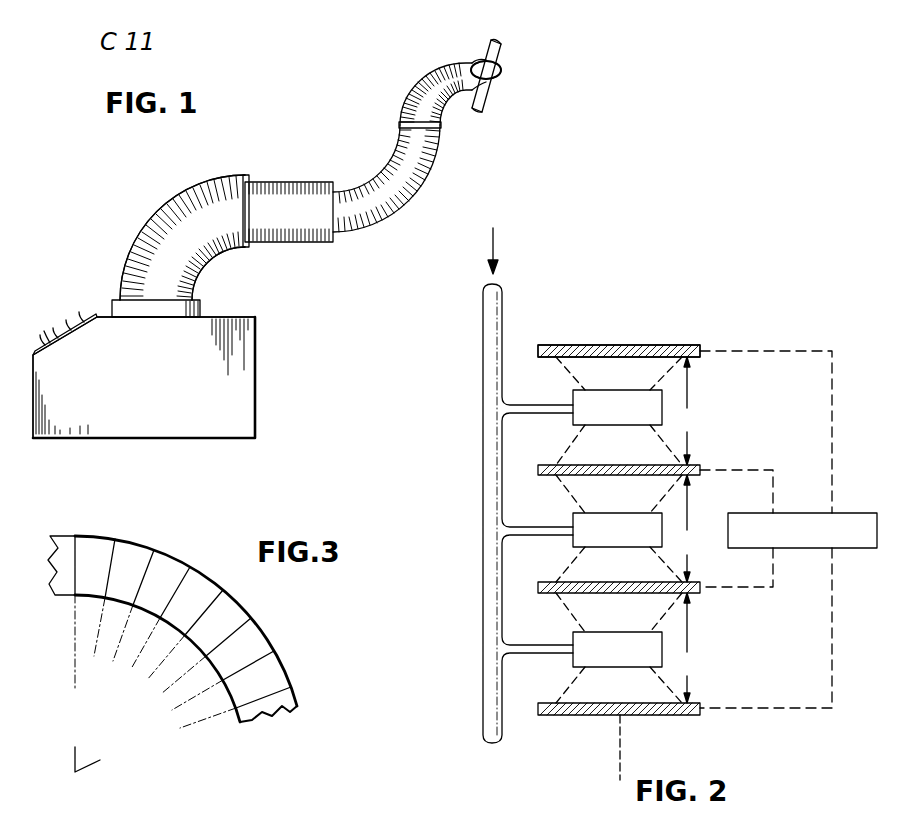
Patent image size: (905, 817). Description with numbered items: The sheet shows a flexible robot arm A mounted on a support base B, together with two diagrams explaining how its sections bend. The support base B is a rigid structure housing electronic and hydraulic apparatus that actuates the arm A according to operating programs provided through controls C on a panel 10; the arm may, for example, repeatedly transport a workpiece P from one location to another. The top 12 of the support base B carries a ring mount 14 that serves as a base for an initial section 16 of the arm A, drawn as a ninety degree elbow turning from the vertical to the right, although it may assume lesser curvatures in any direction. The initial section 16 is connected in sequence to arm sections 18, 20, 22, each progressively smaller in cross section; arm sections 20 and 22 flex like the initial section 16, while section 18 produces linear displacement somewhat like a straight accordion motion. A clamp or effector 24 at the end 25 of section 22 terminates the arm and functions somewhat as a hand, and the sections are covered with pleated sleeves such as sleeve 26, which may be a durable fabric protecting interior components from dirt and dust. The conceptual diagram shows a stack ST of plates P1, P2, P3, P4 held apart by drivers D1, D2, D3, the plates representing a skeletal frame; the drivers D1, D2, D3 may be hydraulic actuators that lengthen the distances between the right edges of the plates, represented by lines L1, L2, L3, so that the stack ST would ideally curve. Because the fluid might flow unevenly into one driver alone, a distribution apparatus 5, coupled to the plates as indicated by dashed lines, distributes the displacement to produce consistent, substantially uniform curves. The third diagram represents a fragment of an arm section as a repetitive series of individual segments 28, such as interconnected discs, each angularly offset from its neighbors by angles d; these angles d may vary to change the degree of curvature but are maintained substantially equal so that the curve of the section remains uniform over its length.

In FIG. 1, the flexible robot arm A is at (213, 170).
In FIG. 1, the support base B is at (256, 390).
In FIG. 1, the controls C is at (55, 308).
In FIG. 1, the workpiece P is at (483, 100).
In FIG. 1, the panel 10 is at (82, 322).
In FIG. 1, the top of the support base 12 is at (243, 316).
In FIG. 1, the ring mount 14 is at (207, 297).
In FIG. 1, the initial section 16 is at (184, 230).
In FIG. 1, the arm section 18 is at (293, 182).
In FIG. 1, the arm section 20 is at (408, 197).
In FIG. 1, the arm section 22 is at (413, 96).
In FIG. 1, the clamp or effector 24 is at (498, 78).
In FIG. 1, the end 25 is at (473, 62).
In FIG. 1, the pleated sleeve 26 is at (193, 232).
In FIG. 3, the segments 28 is at (185, 654).
In FIG. 3, the angles d is at (150, 660).
In FIG. 2, the stack ST is at (626, 335).
In FIG. 2, the plate P1 is at (700, 349).
In FIG. 2, the plate P2 is at (700, 469).
In FIG. 2, the plate P3 is at (700, 587).
In FIG. 2, the plate P4 is at (700, 708).
In FIG. 2, the driver D1 is at (662, 405).
In FIG. 2, the driver D2 is at (662, 528).
In FIG. 2, the driver D3 is at (662, 647).
In FIG. 2, the line L1 is at (687, 411).
In FIG. 2, the line L2 is at (687, 528).
In FIG. 2, the line L3 is at (687, 648).
In FIG. 2, the distribution apparatus 5 is at (808, 549).